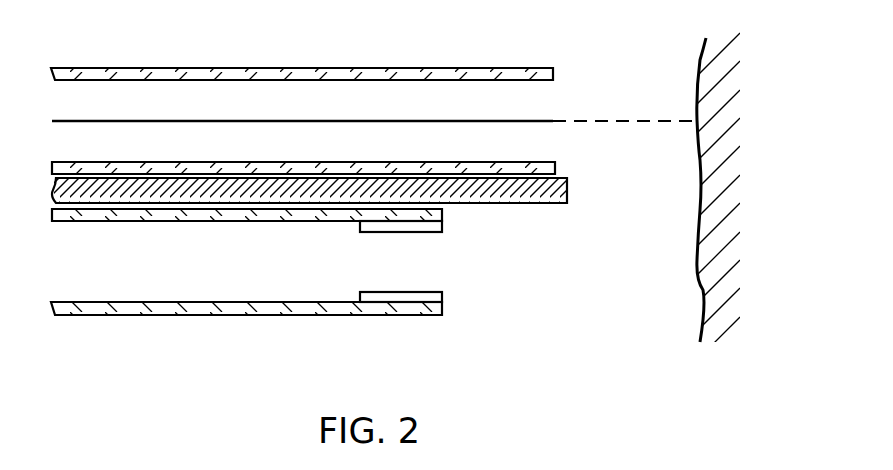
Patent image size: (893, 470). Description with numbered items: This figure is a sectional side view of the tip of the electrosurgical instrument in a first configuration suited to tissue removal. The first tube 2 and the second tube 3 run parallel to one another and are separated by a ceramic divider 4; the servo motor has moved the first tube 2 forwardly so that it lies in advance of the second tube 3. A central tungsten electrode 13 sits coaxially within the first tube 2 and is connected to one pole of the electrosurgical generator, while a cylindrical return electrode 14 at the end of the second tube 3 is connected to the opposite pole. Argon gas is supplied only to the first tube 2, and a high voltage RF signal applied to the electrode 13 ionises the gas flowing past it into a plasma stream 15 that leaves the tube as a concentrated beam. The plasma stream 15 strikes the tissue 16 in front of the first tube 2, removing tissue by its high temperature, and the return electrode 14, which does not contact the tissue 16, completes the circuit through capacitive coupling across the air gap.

The first tube 2 is at (187, 68).
The central tungsten electrode 13 is at (357, 121).
The plasma stream 15 is at (600, 121).
The tissue 16 is at (720, 68).
The ceramic divider 4 is at (567, 190).
The second tube 3 is at (128, 316).
The cylindrical return electrode 14 is at (443, 297).